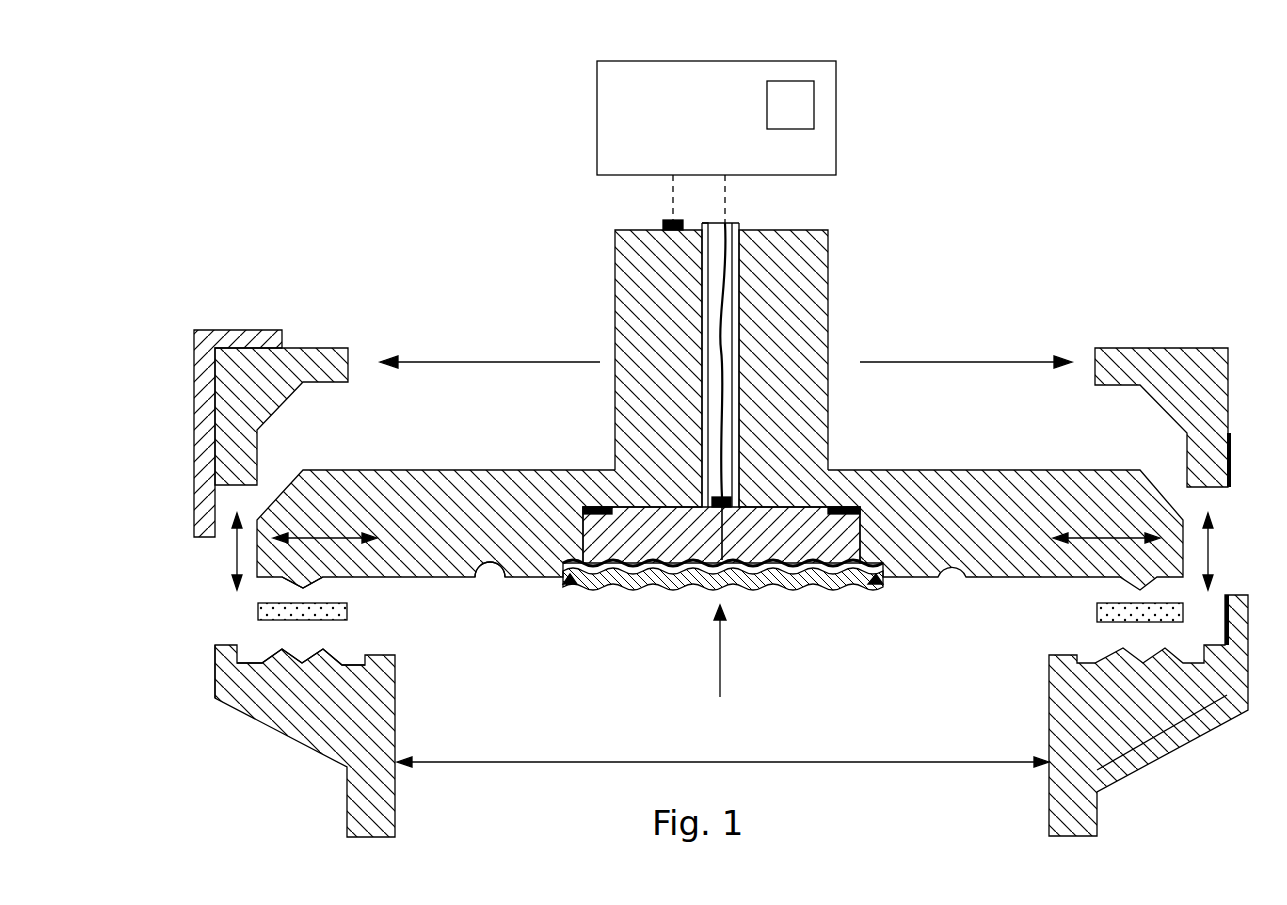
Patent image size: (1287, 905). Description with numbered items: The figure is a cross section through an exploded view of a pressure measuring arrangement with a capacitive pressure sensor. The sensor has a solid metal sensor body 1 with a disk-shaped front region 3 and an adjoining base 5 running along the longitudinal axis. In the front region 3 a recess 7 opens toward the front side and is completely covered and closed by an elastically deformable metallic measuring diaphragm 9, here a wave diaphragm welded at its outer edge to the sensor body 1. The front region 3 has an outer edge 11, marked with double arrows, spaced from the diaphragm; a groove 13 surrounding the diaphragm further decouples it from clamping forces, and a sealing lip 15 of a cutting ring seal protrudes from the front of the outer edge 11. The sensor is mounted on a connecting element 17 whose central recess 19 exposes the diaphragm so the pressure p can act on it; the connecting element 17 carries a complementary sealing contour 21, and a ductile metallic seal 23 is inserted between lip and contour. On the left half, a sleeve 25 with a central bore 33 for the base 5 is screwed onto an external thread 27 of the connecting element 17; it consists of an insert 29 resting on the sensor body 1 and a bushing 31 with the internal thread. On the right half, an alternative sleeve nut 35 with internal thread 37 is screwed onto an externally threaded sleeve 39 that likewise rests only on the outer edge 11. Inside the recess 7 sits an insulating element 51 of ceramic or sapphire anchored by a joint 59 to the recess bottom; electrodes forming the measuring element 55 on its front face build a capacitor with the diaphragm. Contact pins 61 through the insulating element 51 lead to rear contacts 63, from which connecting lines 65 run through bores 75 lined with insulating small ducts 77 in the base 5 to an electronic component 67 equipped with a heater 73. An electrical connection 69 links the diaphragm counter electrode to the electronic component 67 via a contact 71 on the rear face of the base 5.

The sensor body 1 is at (428, 294).
The front region 3 is at (490, 490).
The base 5 is at (633, 283).
The recess 7 is at (585, 530).
The measuring diaphragm 9 is at (723, 616).
The outer edge 11 is at (335, 538).
The groove 13 is at (490, 580).
The sealing lip 15 is at (323, 582).
The connecting element 17 is at (306, 727).
The central recess 19 is at (723, 749).
The sealing contour 21 is at (352, 648).
The seal 23 is at (258, 612).
The sleeve 25 is at (255, 382).
The external thread 27 is at (215, 672).
The insert 29 is at (330, 380).
The bushing 31 is at (207, 410).
The central bore 33 is at (950, 362).
The sleeve nut 35 is at (1178, 738).
The internal thread 37 is at (1225, 620).
The sleeve 39 is at (1150, 362).
The insulating element 51 is at (677, 586).
The measuring element 55 is at (775, 565).
The joint 59 is at (843, 510).
The contact pin 61 is at (749, 568).
The contact 63 is at (718, 490).
The connecting line 65 is at (718, 350).
The electronic component 67 is at (656, 113).
The electrical connection 69 is at (672, 190).
The contact 71 is at (663, 225).
The heater 73 is at (805, 118).
The bore 75 is at (735, 290).
The small duct 77 is at (742, 318).
The pressure p is at (722, 665).